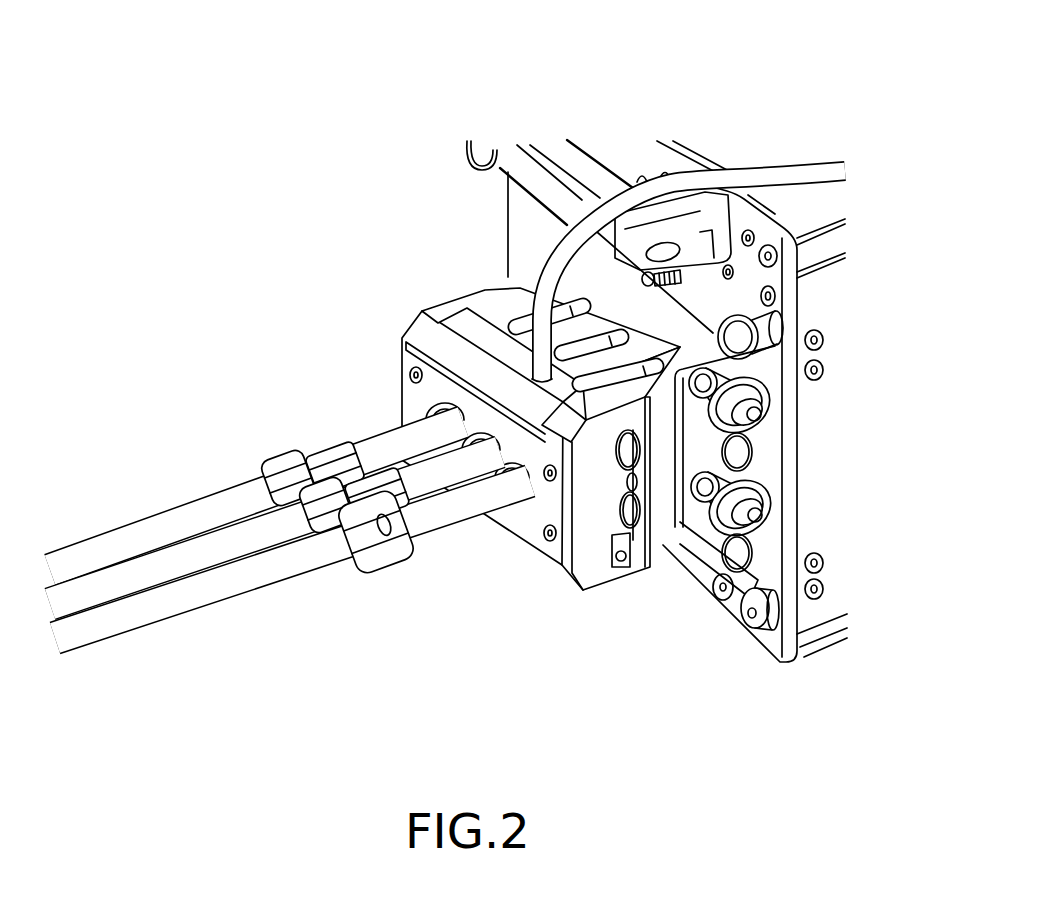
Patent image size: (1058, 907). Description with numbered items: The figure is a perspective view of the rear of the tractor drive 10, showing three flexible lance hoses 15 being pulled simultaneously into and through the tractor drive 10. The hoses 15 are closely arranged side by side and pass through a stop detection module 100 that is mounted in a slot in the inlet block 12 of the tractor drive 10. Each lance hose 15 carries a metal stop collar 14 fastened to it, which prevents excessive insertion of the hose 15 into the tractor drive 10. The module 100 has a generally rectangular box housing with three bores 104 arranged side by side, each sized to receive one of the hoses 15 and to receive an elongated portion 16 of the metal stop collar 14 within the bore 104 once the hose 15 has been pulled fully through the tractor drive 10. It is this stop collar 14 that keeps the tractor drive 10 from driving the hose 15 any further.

The tractor drive 10 is at (793, 108).
The inlet block 12 is at (567, 598).
The metal stop collar 14 is at (287, 450).
The flexible lance hose 15 is at (152, 535).
The elongated portion 16 is at (400, 503).
The stop detection module 100 is at (441, 290).
The bore 104 is at (533, 498).